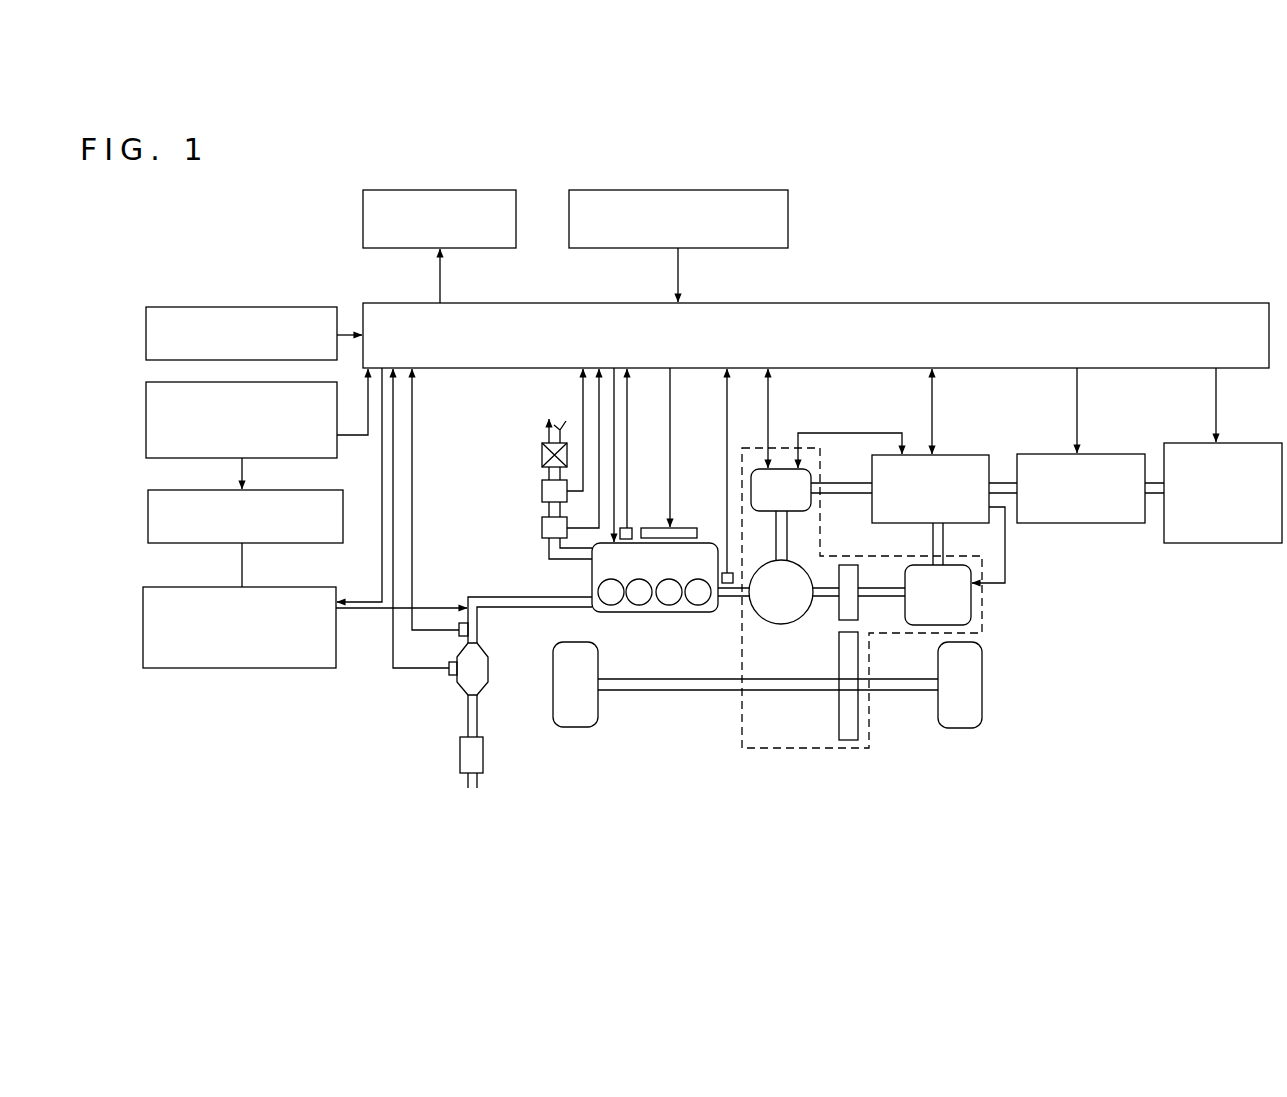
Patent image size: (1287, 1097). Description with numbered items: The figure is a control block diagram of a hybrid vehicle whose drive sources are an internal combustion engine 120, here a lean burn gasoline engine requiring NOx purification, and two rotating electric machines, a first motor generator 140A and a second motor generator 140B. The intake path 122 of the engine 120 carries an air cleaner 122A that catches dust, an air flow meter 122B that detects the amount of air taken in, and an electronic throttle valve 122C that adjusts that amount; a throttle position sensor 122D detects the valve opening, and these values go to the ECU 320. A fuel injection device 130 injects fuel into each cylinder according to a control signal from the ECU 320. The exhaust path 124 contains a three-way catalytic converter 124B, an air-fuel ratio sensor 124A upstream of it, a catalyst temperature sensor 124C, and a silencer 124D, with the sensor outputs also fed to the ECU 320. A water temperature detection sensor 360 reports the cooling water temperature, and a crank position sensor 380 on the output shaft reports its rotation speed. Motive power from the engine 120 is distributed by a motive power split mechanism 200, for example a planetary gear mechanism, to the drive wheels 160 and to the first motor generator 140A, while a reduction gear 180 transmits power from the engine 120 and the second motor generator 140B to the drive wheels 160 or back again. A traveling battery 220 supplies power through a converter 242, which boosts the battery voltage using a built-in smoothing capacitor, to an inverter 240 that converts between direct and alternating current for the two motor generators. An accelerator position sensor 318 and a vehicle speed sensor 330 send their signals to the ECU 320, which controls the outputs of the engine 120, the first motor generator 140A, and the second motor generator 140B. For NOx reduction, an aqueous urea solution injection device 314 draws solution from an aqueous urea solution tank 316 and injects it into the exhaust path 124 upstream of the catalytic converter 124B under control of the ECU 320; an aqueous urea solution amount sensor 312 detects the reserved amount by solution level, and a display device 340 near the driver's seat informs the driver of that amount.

The engine 120 is at (650, 612).
The intake path 122 is at (553, 561).
The air cleaner 122A is at (542, 455).
The air flow meter 122B is at (542, 492).
The electronic throttle valve 122C is at (542, 530).
The throttle position sensor 122D is at (564, 553).
The exhaust path 124 is at (516, 612).
The air-fuel ratio sensor 124A is at (457, 622).
The three-way catalytic converter 124B is at (488, 670).
The catalyst temperature sensor 124C is at (449, 670).
The silencer 124D is at (483, 760).
The fuel injection device 130 is at (686, 526).
The MG(1) 140A is at (781, 468).
The MG(2) 140B is at (971, 612).
The drive wheels 160 is at (578, 727).
The reduction gear 180 is at (858, 722).
The motive power split mechanism 200 is at (781, 624).
The traveling battery 220 is at (1218, 543).
The inverter 240 is at (967, 454).
The converter 242 is at (1110, 453).
The aqueous urea solution amount sensor 312 is at (145, 435).
The aqueous urea solution injection device 314 is at (143, 609).
The aqueous urea solution tank 316 is at (148, 522).
The accelerator position sensor 318 is at (634, 190).
The ECU 320 is at (1122, 303).
The vehicle speed sensor 330 is at (213, 307).
The display device 340 is at (441, 190).
The water temperature detection sensor 360 is at (631, 526).
The crank position sensor 380 is at (722, 588).